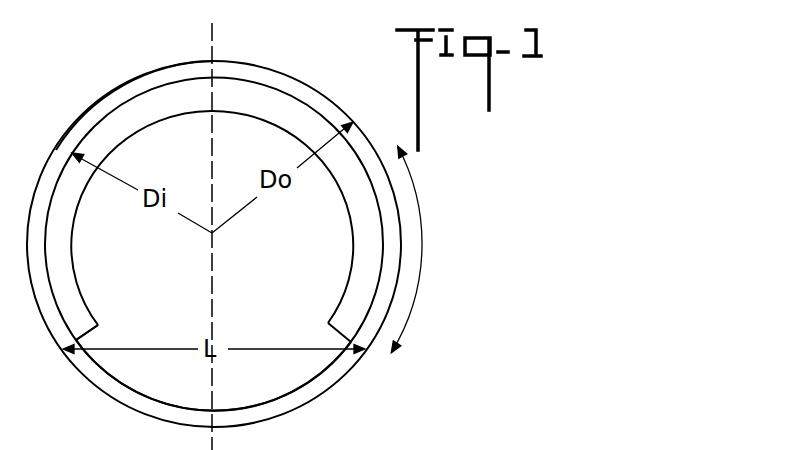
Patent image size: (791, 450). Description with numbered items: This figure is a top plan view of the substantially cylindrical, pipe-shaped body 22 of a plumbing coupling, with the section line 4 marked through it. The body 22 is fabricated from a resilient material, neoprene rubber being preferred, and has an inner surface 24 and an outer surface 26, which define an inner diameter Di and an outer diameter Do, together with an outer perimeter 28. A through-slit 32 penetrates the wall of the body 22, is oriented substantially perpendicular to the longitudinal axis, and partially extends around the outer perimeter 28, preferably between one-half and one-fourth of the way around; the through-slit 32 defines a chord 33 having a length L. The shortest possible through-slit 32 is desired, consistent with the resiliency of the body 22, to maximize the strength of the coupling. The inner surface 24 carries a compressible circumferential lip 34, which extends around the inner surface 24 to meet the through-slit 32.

The section line 4- 4 is at (192, 40).
The cylindrical body 22 is at (323, 73).
The inner surface 24 is at (140, 99).
The outer surface 26 is at (56, 150).
The outer perimeter 28 is at (415, 249).
The through-slit 32 is at (279, 404).
The chord 33 is at (155, 348).
The compressible circumferential lip 34 is at (58, 223).